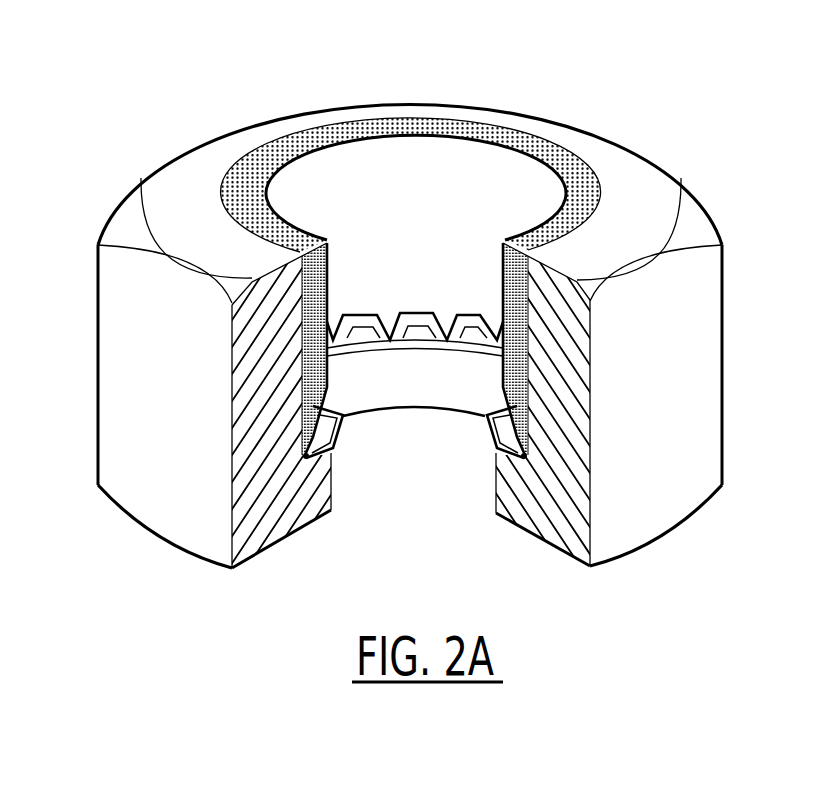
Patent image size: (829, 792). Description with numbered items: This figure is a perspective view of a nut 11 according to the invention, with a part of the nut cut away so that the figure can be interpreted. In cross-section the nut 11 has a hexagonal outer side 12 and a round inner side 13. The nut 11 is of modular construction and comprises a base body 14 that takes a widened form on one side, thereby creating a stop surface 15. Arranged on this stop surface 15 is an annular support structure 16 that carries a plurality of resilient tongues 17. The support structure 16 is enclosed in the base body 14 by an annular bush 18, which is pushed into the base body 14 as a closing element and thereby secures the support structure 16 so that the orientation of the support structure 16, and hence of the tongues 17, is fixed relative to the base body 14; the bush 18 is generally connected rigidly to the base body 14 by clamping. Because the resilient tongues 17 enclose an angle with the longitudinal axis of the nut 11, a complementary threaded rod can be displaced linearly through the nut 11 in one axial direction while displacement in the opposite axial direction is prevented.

The nut 11 is at (127, 103).
The hexagonal outer side 12 is at (627, 188).
The round inner side 13 is at (468, 184).
The base body 14 is at (170, 493).
The stop surface 15 is at (320, 463).
The annular support structure 16 is at (334, 455).
The resilient tongues 17 is at (333, 409).
The annular bush 18 is at (306, 145).